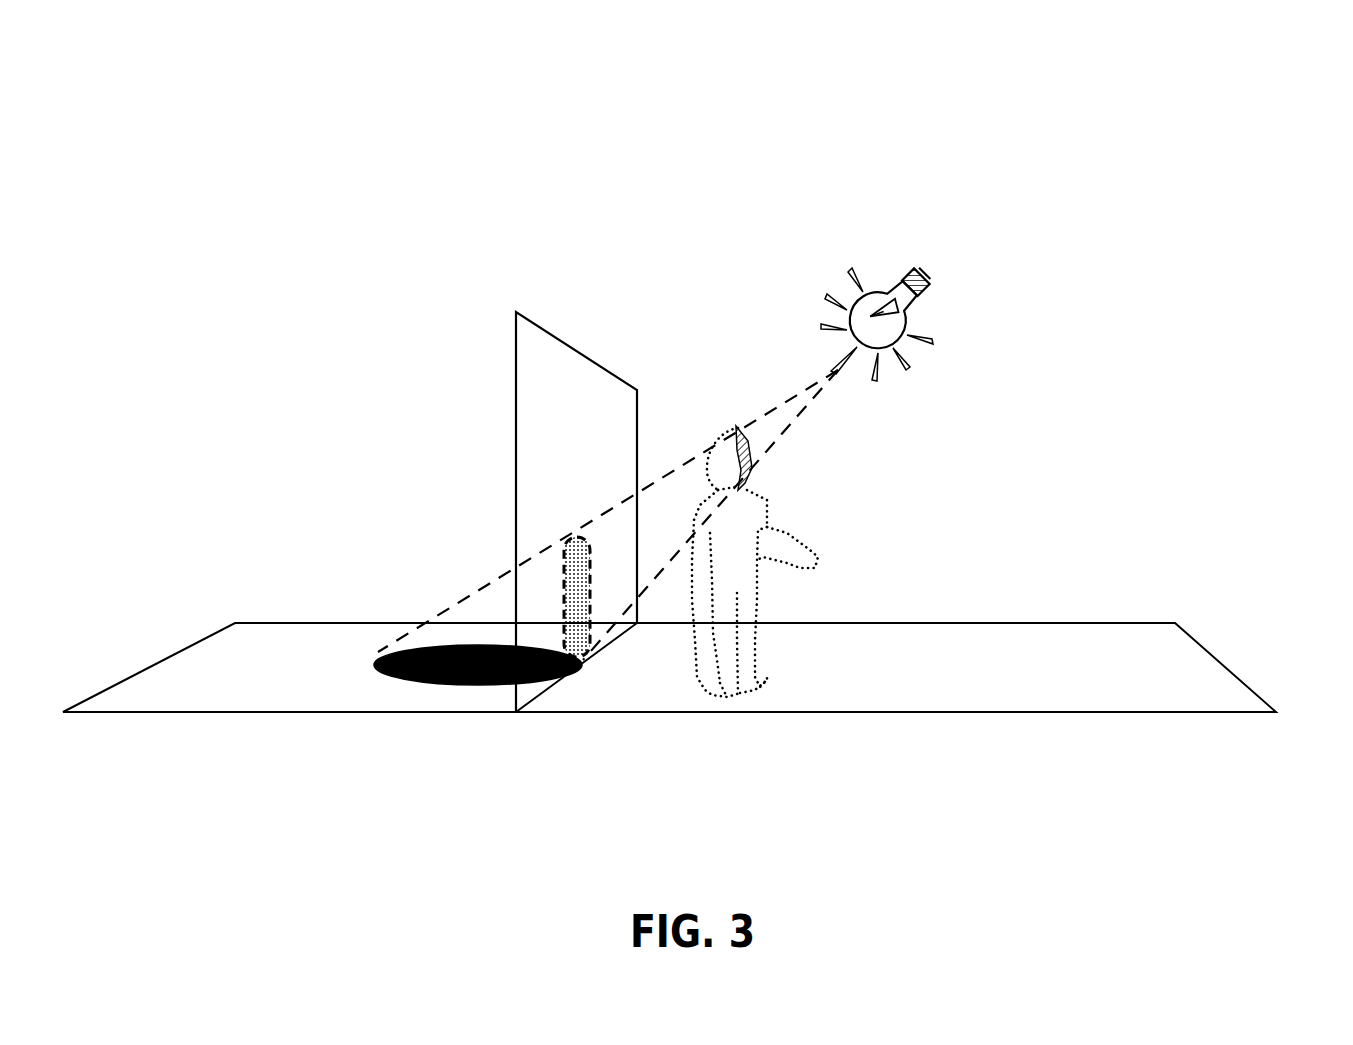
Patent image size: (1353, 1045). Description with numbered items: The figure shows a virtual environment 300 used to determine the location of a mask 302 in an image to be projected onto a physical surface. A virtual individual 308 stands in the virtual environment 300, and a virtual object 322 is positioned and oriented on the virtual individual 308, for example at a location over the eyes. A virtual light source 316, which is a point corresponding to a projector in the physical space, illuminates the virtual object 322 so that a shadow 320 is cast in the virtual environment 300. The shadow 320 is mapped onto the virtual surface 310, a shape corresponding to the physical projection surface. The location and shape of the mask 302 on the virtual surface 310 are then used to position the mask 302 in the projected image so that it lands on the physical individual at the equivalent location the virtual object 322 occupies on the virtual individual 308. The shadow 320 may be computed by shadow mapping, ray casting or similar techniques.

The virtual environment 300 is at (1298, 130).
The mask 302 is at (580, 545).
The virtual individual 308 is at (762, 595).
The virtual surface 310 is at (515, 322).
The virtual light source 316 is at (912, 318).
The shadow 320 is at (375, 665).
The virtual object 322 is at (742, 431).